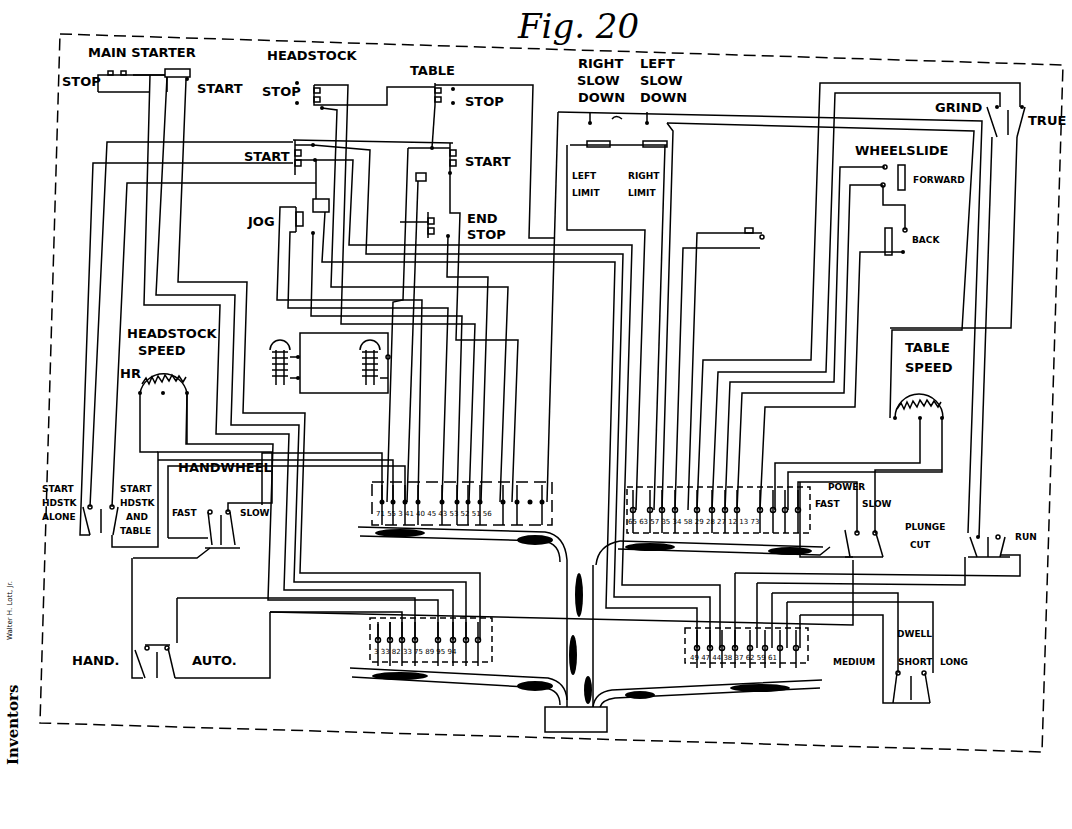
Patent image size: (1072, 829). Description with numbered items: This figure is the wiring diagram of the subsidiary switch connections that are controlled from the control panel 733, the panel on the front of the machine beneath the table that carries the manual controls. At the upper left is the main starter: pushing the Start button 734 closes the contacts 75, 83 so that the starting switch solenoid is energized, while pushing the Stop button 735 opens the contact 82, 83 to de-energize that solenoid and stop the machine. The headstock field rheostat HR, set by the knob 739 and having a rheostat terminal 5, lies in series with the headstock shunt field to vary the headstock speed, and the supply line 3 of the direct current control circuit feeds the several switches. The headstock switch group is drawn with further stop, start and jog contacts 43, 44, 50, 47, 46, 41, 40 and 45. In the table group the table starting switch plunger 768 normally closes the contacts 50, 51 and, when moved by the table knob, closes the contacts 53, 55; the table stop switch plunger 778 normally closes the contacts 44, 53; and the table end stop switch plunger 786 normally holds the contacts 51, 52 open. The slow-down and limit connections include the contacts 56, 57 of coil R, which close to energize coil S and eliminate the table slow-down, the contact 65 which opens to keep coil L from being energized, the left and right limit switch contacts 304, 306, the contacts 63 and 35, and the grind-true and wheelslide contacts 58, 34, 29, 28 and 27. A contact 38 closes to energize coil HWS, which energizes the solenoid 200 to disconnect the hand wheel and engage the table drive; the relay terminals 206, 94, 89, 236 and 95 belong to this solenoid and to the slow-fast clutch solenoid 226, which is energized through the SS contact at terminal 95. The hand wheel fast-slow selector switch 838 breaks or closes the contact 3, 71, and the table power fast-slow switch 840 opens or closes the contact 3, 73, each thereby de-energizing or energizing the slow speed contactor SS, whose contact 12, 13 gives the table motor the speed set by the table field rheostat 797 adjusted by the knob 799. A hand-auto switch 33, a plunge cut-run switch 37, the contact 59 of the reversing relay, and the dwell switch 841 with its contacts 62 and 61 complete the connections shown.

The stop contact 82 is at (127, 76).
The starter contact 83 is at (140, 66).
The starting contact 75 is at (190, 70).
The Stop button 735 is at (112, 86).
The Start button 734 is at (180, 90).
The headstock stop switch 43 is at (365, 82).
The table stop switch contact 44 is at (379, 359).
The table starting switch contact 50 is at (293, 140).
The start switch contact 47 is at (502, 389).
The start switch contact 46 is at (507, 399).
The jog switch 41 is at (290, 208).
The jog switch contact 40 is at (368, 367).
The jog switch contact 45 is at (386, 362).
The table stop switch plunger 778 is at (476, 160).
The table stop switch contact 53 is at (428, 140).
The table starting switch plunger 768 is at (435, 158).
The table start contact 55 is at (543, 338).
The table start switch contact 51 is at (452, 210).
The table end stop contact 52 is at (458, 357).
The table end stop switch plunger 786 is at (400, 221).
The coil R contact 56 is at (618, 116).
The coil R contact 65 is at (616, 316).
The left limit switch 304 is at (591, 151).
The right limit switch 306 is at (648, 325).
The coil R contact 57 is at (840, 319).
The line 63 is at (674, 152).
The supply line 3 is at (577, 414).
The switch 35 is at (730, 362).
The true line 58 is at (1005, 86).
The grind-true selector switch 34 is at (880, 301).
The wheelslide forward contact 29 is at (806, 337).
The wheelslide line 28 is at (833, 337).
The wheelslide back contact 27 is at (845, 378).
The headstock rheostat knob 739 is at (163, 393).
The rheostat terminal 5 is at (199, 415).
The relay coil 206 is at (282, 348).
The hand wheel solenoid 200 is at (272, 376).
The relay terminal 94 is at (305, 355).
The relay terminal 89 is at (339, 388).
The relay coil 236 is at (362, 350).
The slow-fast clutch solenoid 226 is at (343, 370).
The SS contact terminal 95 is at (394, 348).
The hand wheel selector contact 71 is at (286, 500).
The handwheel switch 838 is at (240, 552).
The hand-auto switch 33 is at (177, 621).
The control panel 733 is at (482, 725).
The table rheostat knob 799 is at (918, 400).
The table field rheostat 797 is at (938, 405).
The SS contact 12 is at (849, 464).
The SS contact 13 is at (868, 464).
The power fast-slow contact 73 is at (870, 513).
The table power fast-slow control switch 840 is at (838, 548).
The plunge cut-run switch 37 is at (998, 530).
The control contact 38 is at (884, 565).
The TR contact 59 is at (895, 676).
The dwell long contact 62 is at (932, 676).
The dwell common 61 is at (890, 710).
The dwell switch 841 is at (915, 705).